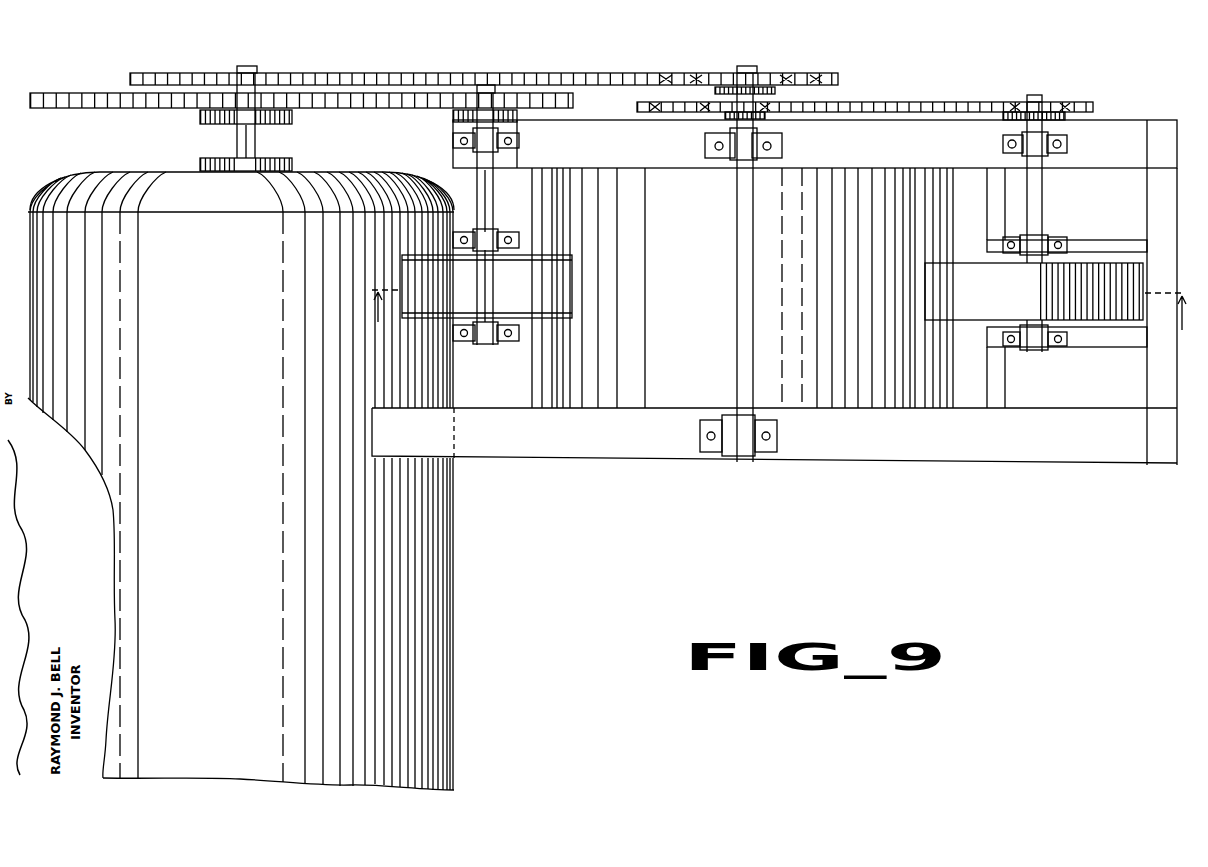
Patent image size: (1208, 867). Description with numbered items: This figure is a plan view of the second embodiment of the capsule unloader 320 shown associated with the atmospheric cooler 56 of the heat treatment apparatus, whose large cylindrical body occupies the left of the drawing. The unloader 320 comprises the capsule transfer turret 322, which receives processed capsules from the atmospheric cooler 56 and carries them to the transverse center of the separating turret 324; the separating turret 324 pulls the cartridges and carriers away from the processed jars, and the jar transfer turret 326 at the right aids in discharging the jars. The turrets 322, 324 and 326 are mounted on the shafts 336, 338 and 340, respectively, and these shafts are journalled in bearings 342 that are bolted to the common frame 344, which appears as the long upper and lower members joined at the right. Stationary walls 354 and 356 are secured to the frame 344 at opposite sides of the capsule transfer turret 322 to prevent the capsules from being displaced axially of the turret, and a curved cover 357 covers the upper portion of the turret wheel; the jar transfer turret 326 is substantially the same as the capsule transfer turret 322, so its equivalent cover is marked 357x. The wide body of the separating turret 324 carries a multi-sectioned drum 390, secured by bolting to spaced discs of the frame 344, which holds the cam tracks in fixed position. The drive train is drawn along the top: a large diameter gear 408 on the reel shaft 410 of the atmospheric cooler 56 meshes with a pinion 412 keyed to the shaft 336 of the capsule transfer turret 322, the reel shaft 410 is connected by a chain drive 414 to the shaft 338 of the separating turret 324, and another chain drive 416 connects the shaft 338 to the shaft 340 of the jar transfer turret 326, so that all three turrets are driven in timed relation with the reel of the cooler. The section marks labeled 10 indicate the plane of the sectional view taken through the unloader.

The atmospheric cooler 56 is at (216, 381).
The capsule unloader 320 is at (606, 488).
The capsule transfer turret 322 is at (578, 284).
The separating turret 324 is at (821, 165).
The jar transfer turret 326 is at (1075, 266).
The shaft 336 is at (492, 162).
The shaft 338 is at (766, 84).
The shaft 340 is at (1045, 130).
The bearings 342 is at (472, 230).
The frame 344 is at (1095, 461).
The stationary wall 354 is at (506, 254).
The stationary wall 356 is at (522, 313).
The curved cover 357 is at (552, 299).
The curved cover 357x is at (988, 312).
The multi-sectioned drum 390 is at (746, 328).
The large diameter gear 408 is at (58, 95).
The reel shaft 410 is at (237, 141).
The pinion 412 is at (372, 108).
The chain drive 414 is at (418, 73).
The chain drive 416 is at (877, 104).
The section line FIG. 10 is at (779, 312).